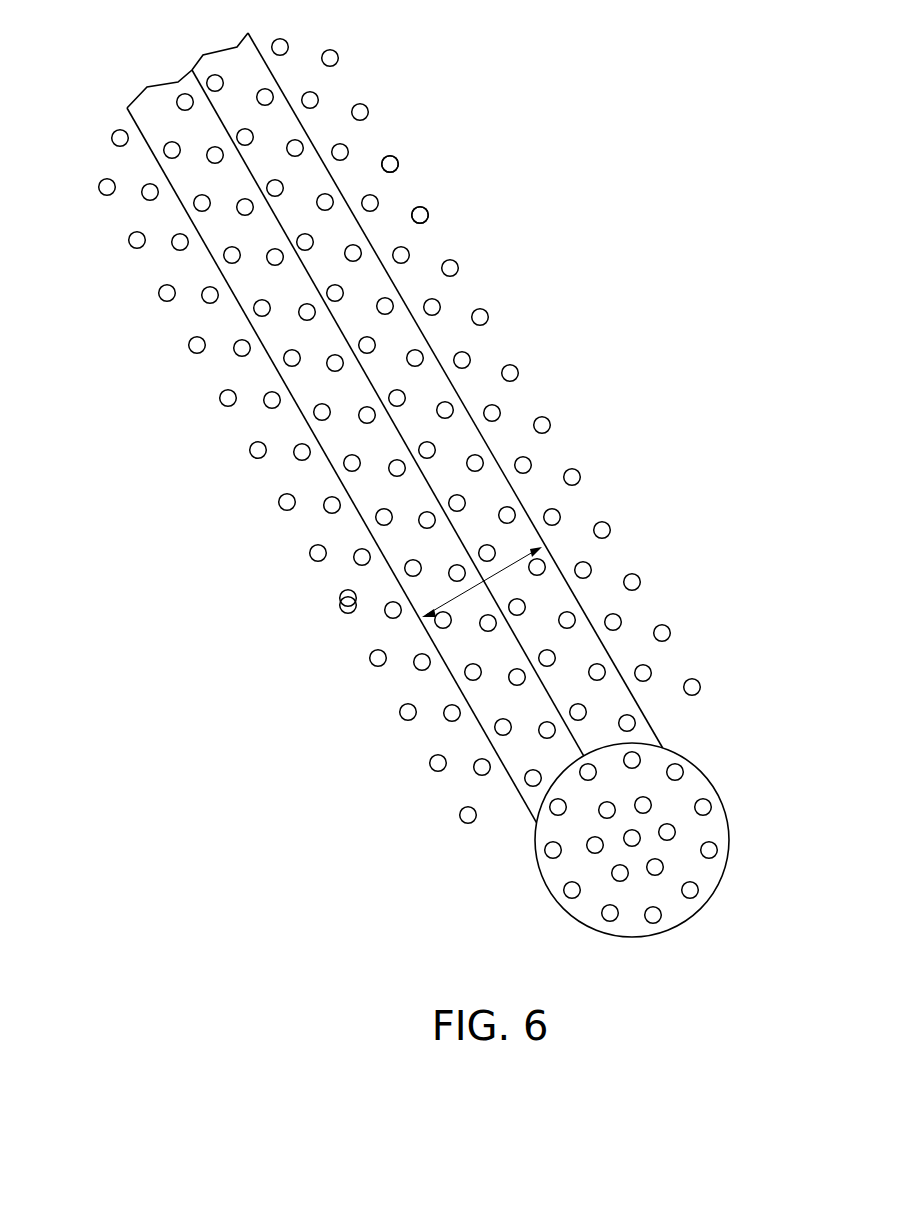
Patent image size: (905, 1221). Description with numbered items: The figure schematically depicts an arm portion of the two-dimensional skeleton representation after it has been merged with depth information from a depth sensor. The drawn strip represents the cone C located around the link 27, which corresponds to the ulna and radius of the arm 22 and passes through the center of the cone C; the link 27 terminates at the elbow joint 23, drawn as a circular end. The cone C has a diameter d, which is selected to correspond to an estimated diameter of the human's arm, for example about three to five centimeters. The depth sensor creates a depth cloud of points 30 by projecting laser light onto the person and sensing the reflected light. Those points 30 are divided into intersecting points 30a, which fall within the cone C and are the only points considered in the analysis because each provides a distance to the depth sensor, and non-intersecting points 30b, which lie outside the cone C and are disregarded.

The arm 22 is at (452, 428).
The elbow joint 23 is at (729, 838).
The link 27 is at (371, 380).
The points 30 is at (429, 155).
The intersecting points 30a is at (303, 147).
The non-intersecting points 30b is at (459, 267).
The cone C is at (363, 227).
The diameter d is at (530, 548).